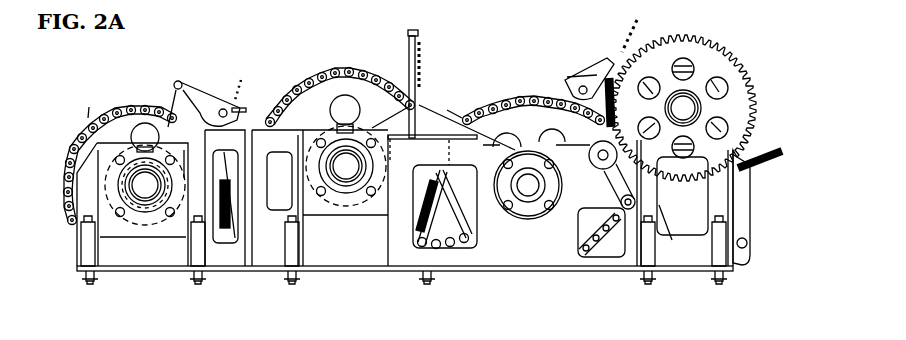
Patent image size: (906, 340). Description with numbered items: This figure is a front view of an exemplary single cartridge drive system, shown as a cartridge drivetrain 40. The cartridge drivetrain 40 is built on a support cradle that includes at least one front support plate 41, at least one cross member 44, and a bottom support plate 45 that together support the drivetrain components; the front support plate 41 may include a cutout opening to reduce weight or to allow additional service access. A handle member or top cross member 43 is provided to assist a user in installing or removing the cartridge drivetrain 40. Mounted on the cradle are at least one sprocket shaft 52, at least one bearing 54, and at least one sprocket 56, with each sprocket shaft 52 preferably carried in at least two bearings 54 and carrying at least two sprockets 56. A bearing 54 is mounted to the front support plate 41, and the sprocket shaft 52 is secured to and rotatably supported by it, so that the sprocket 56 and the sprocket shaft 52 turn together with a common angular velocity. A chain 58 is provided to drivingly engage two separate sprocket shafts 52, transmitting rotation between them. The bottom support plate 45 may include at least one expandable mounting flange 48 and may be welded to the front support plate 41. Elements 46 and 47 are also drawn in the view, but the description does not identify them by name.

The cartridge drivetrain 40 is at (502, 77).
The front support plate 41 is at (117, 256).
The top cross member 43 is at (411, 53).
The cross member 44 is at (733, 186).
The bottom support plate 45 is at (431, 272).
The tensioner arm 46 is at (178, 82).
The bushing 47 is at (722, 221).
The expandable mounting flange 48 is at (716, 283).
The sprocket shaft 52 is at (147, 187).
The bearing 54 is at (157, 218).
The sprocket 56 is at (113, 135).
The chain 58 is at (72, 150).